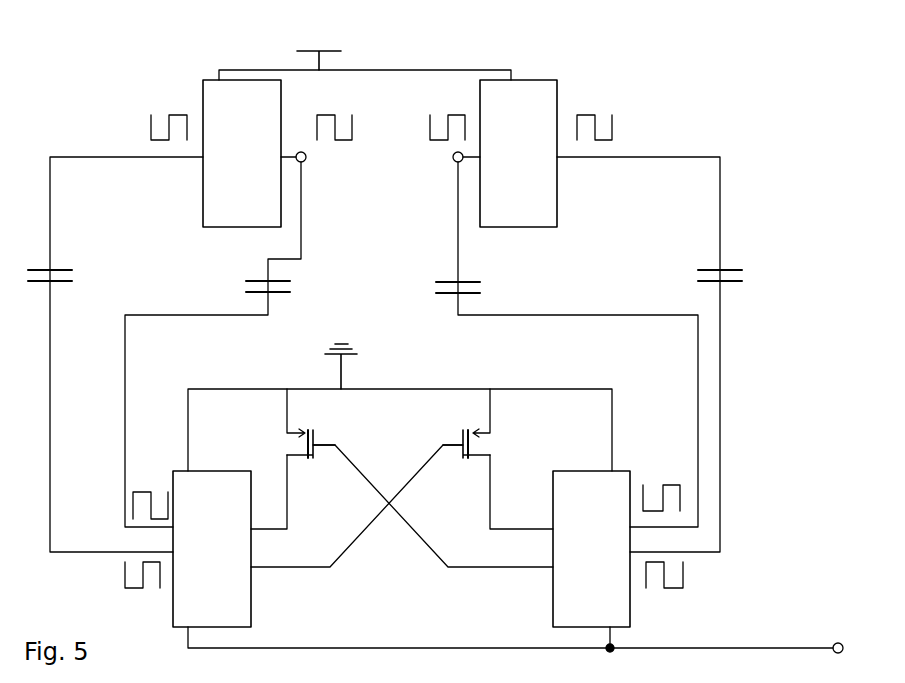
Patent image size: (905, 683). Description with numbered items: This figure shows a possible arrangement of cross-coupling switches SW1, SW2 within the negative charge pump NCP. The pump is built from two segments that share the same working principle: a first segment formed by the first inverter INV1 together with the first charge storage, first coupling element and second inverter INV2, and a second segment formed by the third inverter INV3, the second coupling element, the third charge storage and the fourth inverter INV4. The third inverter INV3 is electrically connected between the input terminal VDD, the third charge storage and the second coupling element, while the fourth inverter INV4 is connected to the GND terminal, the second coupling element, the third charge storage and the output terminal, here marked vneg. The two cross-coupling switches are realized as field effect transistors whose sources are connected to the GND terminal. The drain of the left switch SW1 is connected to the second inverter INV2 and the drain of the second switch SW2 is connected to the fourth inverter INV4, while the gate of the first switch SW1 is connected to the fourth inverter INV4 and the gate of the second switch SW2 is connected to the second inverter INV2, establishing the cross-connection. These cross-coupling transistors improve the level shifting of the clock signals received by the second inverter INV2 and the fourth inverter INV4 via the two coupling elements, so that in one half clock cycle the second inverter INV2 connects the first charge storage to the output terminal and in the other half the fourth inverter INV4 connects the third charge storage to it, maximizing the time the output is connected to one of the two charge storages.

The negative charge pump NCP is at (759, 80).
The first inverter INV1 is at (203, 203).
The second inverter INV2 is at (251, 597).
The third inverter INV3 is at (558, 86).
The fourth inverter INV4 is at (553, 620).
The first cross-coupling switch SW1 is at (323, 423).
The second cross-coupling switch SW2 is at (496, 423).
The input terminal VDD is at (322, 45).
The GND terminal GND is at (377, 363).
The negative output voltage vneg is at (816, 628).